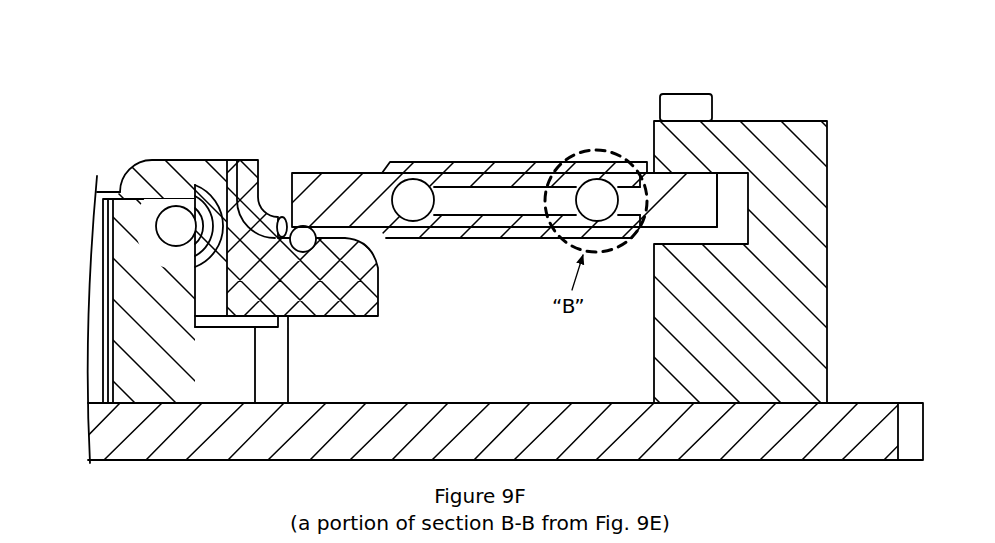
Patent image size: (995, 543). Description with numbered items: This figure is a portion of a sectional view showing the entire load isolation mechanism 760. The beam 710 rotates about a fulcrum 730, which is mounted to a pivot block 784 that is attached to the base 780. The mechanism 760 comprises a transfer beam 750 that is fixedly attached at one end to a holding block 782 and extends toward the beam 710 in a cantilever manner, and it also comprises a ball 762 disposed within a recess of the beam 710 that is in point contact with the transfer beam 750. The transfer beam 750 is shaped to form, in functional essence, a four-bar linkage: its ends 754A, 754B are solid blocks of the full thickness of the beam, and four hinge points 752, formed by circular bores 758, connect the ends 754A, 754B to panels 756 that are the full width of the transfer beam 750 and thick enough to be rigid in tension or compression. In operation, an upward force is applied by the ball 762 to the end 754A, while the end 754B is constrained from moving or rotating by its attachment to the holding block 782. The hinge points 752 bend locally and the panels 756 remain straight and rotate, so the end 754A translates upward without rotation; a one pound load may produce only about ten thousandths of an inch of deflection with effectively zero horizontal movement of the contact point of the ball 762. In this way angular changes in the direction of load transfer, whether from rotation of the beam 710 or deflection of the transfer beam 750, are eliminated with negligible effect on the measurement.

The beam 710 is at (305, 295).
The fulcrum 730 is at (178, 222).
The transfer beam 750 is at (420, 133).
The hinge points 752 is at (645, 215).
The end 754A is at (358, 200).
The end 754B is at (647, 190).
The panels 756 is at (505, 180).
The circular bores 758 is at (593, 210).
The load isolation mechanism 760 is at (492, 52).
The ball 762 is at (298, 232).
The base 780 is at (872, 417).
The holding block 782 is at (795, 150).
The pivot block 784 is at (135, 215).